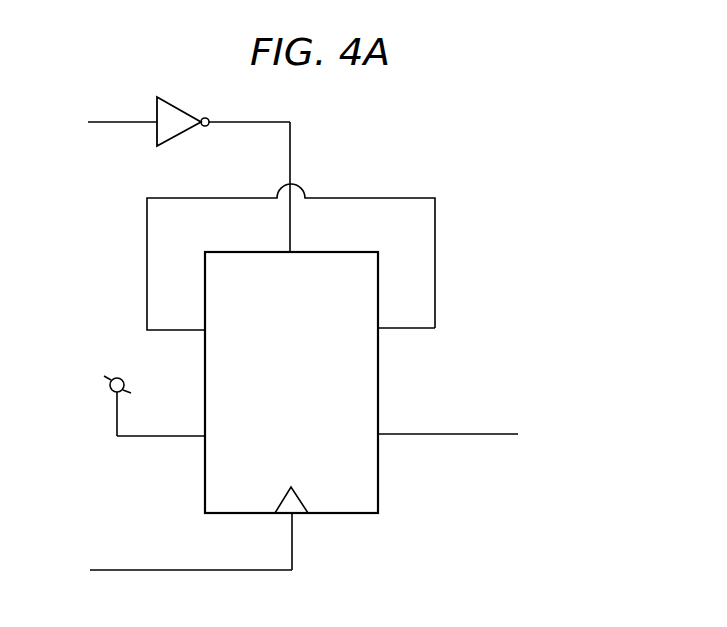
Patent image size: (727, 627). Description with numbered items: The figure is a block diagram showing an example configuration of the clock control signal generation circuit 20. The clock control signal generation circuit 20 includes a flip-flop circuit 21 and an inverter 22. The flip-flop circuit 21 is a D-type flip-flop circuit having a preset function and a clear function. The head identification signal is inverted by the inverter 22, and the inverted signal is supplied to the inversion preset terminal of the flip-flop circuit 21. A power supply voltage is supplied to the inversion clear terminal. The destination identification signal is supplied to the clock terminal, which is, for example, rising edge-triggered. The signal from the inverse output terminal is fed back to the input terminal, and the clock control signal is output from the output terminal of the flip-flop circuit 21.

The clock control signal generation circuit 20 is at (505, 222).
The flip-flop circuit 21 is at (378, 389).
The inverter 22 is at (178, 104).